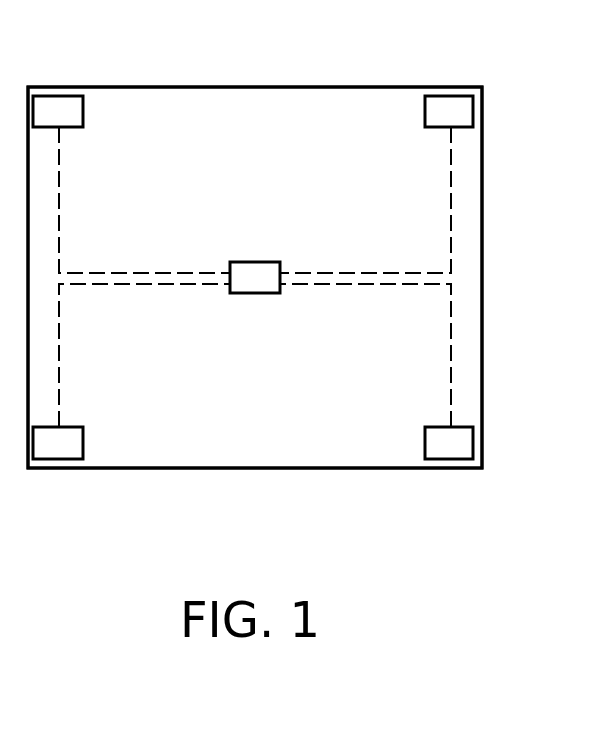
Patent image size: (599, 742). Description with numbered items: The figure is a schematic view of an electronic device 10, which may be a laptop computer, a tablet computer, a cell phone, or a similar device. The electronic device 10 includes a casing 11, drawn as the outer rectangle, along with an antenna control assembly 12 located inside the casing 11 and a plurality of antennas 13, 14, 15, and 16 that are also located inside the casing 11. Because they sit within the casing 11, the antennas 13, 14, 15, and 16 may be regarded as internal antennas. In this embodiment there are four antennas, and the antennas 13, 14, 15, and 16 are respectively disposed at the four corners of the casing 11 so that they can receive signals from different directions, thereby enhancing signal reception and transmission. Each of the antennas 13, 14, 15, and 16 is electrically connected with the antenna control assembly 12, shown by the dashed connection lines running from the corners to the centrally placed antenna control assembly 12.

The electronic device 10 is at (537, 560).
The casing 11 is at (482, 280).
The antenna control assembly 12 is at (253, 287).
The antenna 13 is at (57, 107).
The antenna 14 is at (452, 107).
The antenna 15 is at (448, 448).
The antenna 16 is at (62, 448).